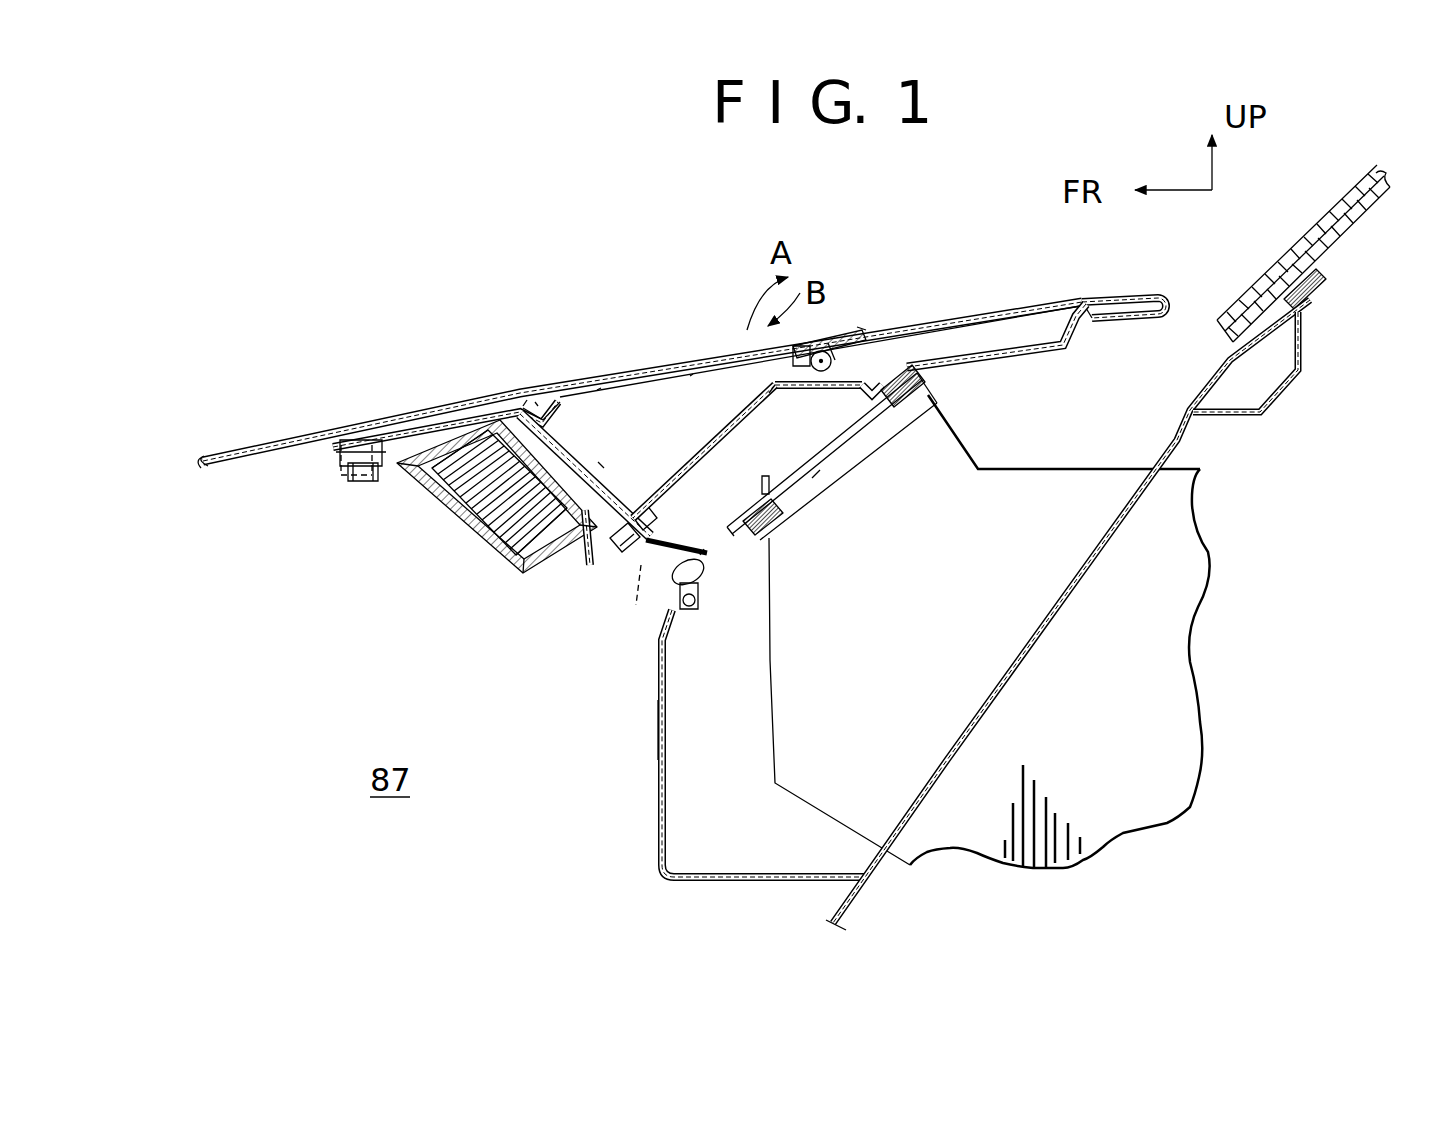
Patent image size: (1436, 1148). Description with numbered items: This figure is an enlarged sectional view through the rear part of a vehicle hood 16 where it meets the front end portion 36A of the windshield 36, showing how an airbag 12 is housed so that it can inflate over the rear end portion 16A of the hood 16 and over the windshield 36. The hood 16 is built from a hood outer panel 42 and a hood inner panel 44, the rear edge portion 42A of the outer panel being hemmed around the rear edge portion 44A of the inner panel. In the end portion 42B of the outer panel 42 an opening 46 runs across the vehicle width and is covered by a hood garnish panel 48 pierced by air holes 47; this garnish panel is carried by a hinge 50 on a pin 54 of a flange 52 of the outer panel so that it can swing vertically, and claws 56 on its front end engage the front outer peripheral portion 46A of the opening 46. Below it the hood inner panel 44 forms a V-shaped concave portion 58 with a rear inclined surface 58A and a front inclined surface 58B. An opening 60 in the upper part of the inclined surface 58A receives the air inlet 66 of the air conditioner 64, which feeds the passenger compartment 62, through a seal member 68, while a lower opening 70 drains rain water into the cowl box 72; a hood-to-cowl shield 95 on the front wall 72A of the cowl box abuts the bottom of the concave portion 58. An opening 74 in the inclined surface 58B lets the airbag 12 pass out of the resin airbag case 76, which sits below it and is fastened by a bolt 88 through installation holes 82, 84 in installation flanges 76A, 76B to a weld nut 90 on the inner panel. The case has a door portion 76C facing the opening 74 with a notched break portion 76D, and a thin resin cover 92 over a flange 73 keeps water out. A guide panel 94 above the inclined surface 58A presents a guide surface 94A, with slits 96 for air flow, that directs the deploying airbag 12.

The airbag 12 is at (478, 559).
The hood 16 is at (455, 313).
The rear end portion of hood 16A is at (842, 325).
The windshield 36 is at (1327, 210).
The front end portion of windshield 36A is at (1263, 273).
The hood outer panel 42 is at (443, 398).
The rear edge portion of hood outer panel 42A is at (1147, 293).
The end portion of hood outer panel 42B is at (857, 327).
The hood inner panel 44 is at (396, 437).
The rear edge portion of hood inner panel 44A is at (1103, 299).
The opening 46 is at (843, 320).
The front outer peripheral portion of opening 46A is at (550, 400).
The air holes 47 is at (597, 390).
The hood garnish panel 48 is at (672, 354).
The hinge 50 is at (832, 371).
The flange 52 is at (863, 332).
The pin 54 is at (812, 478).
The claws 56 is at (538, 406).
The concave portion 58 is at (728, 517).
The inclined surface 58A is at (705, 555).
The inclined surface 58B is at (773, 600).
The opening 60 is at (808, 482).
The passenger compartment 62 is at (1345, 597).
The air conditioner 64 is at (1092, 468).
The air inlet 66 is at (890, 422).
The seal member 68 is at (927, 383).
The opening for drainage 70 is at (703, 573).
The cowl box 72 is at (652, 800).
The front wall of cowl box 72A is at (668, 730).
The flange 73 is at (563, 420).
The opening 74 is at (598, 468).
The airbag case 76 is at (478, 563).
The installation flange 76A is at (392, 470).
The installation flange 76B is at (612, 562).
The door portion 76C is at (573, 545).
The break portion 76D is at (580, 450).
The installation hole 82 is at (355, 470).
The installation hole 84 is at (642, 580).
The bolt 88 is at (380, 482).
The weld nut 90 is at (337, 434).
The cover 92 is at (525, 398).
The guide panel 94 is at (692, 456).
The guide surface 94A is at (730, 434).
The hood-to-cowl shield 95 is at (690, 622).
The slits 96 is at (762, 408).